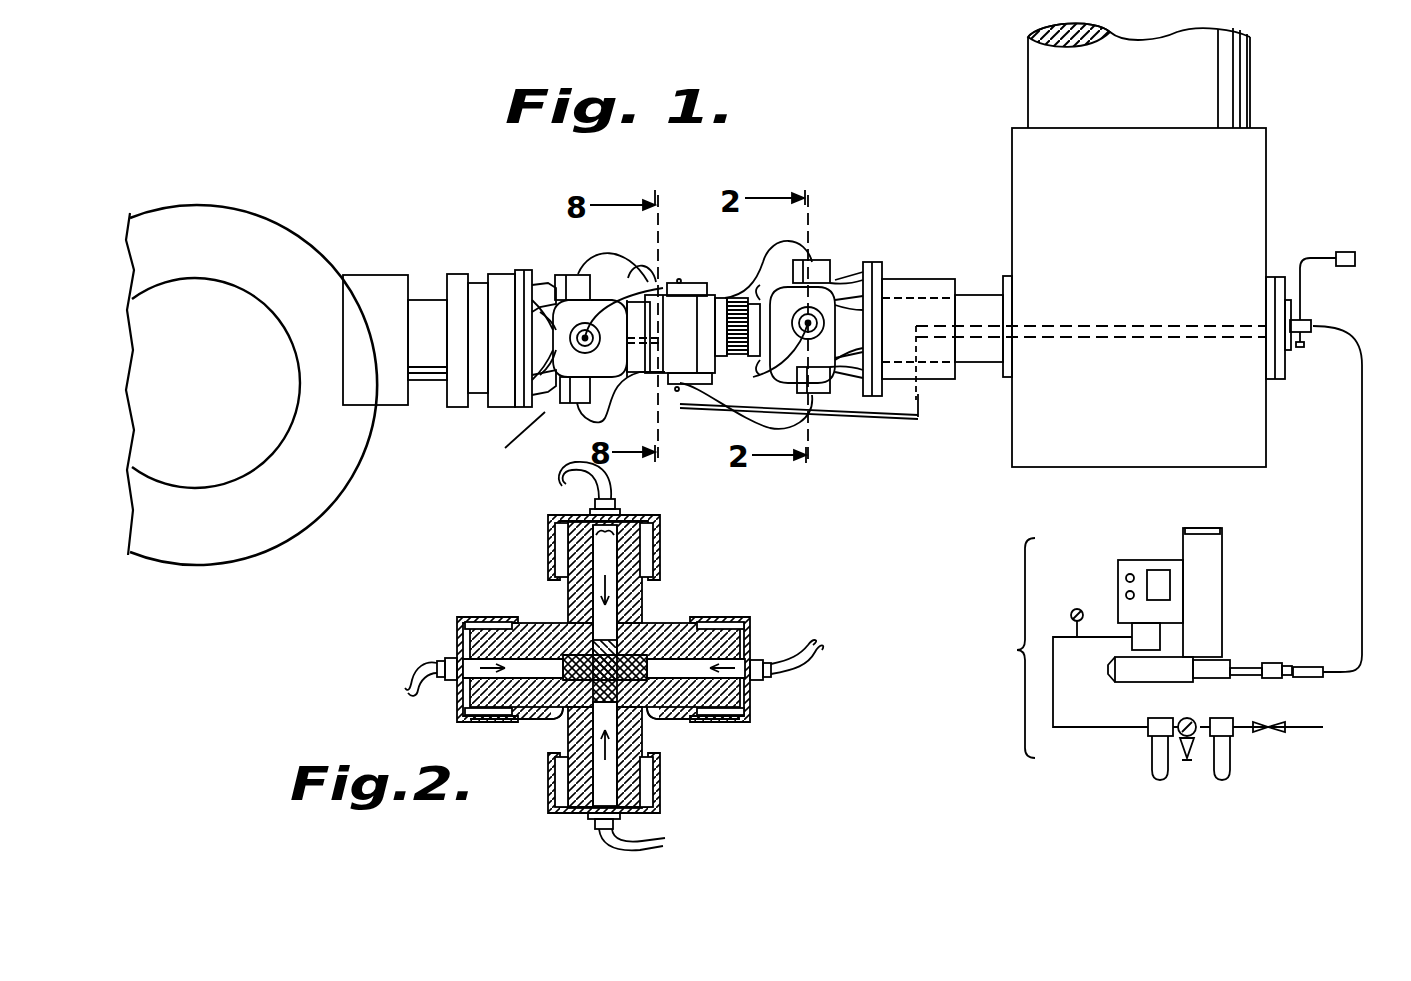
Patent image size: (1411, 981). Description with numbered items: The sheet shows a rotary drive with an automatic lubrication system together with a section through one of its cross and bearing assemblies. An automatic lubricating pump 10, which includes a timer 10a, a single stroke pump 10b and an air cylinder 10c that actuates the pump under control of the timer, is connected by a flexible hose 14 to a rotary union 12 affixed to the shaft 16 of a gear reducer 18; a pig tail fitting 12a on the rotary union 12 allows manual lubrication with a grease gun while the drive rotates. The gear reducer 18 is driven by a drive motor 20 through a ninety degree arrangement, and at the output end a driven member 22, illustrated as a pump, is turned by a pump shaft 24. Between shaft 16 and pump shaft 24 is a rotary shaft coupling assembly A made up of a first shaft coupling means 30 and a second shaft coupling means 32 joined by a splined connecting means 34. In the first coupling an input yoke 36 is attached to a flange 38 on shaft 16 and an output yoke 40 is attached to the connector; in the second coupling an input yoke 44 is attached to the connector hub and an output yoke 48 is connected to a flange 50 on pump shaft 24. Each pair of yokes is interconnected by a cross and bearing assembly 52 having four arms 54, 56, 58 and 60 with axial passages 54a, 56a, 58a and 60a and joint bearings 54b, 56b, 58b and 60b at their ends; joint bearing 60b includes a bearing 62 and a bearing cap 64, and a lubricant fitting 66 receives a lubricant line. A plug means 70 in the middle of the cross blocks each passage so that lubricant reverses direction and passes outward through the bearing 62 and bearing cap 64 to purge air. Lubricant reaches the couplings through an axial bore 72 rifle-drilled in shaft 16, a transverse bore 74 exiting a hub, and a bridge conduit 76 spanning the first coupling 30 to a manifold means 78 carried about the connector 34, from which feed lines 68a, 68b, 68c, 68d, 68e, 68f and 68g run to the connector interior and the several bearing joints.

In FIG. 1, the automatic lubricating pump 10 is at (1152, 659).
In FIG. 1, the timer 10a is at (1118, 572).
In FIG. 1, the single stroke pump 10b is at (1223, 655).
In FIG. 1, the air cylinder 10c is at (1145, 682).
In FIG. 1, the rotary union 12 is at (1318, 322).
In FIG. 1, the pig tail fitting 12a is at (1347, 252).
In FIG. 1, the flexible hose 14 is at (1360, 490).
In FIG. 1, the shaft 16 is at (973, 292).
In FIG. 1, the gear reducer 18 is at (1186, 191).
In FIG. 1, the drive motor 20 is at (1186, 103).
In FIG. 1, the driven member 22 is at (233, 434).
In FIG. 1, the pump shaft 24 is at (413, 298).
In FIG. 1, the first shaft coupling means 30 is at (814, 262).
In FIG. 1, the second shaft coupling means 32 is at (550, 262).
In FIG. 1, the connecting means 34 is at (656, 380).
In FIG. 1, the input yoke 36 is at (868, 262).
In FIG. 1, the flange 38 is at (878, 400).
In FIG. 1, the output yoke 40 is at (753, 300).
In FIG. 1, the input yoke 44 is at (652, 282).
In FIG. 1, the output yoke 48 is at (540, 272).
In FIG. 1, the flange 50 is at (500, 407).
In FIG. 1, the cross and bearing assembly 52 is at (870, 262).
In FIG. 2, the cross and bearing assembly 52 is at (692, 569).
In FIG. 2, the arm 54 is at (647, 580).
In FIG. 2, the axial passage 54a is at (640, 613).
In FIG. 2, the joint bearing 54b is at (636, 516).
In FIG. 2, the arm 56 is at (675, 717).
In FIG. 2, the axial passage 56a is at (716, 622).
In FIG. 2, the joint bearing 56b is at (752, 724).
In FIG. 2, the arm 58 is at (650, 740).
In FIG. 2, the axial passage 58a is at (592, 740).
In FIG. 2, the joint bearing 58b is at (662, 782).
In FIG. 2, the arm 60 is at (536, 625).
In FIG. 2, the axial passage 60a is at (522, 624).
In FIG. 2, the joint bearing 60b is at (460, 618).
In FIG. 2, the bearing 62 is at (470, 722).
In FIG. 2, the bearing cap 64 is at (457, 712).
In FIG. 2, the lubricant fitting 66 is at (445, 657).
In FIG. 1, the feed line 68a is at (666, 286).
In FIG. 1, the feed line 68b is at (588, 265).
In FIG. 2, the feed line 68b is at (572, 478).
In FIG. 1, the feed line 68c is at (580, 408).
In FIG. 2, the feed line 68c is at (660, 848).
In FIG. 1, the feed line 68d is at (505, 440).
In FIG. 2, the feed line 68d is at (406, 690).
In FIG. 2, the feed line 68e is at (817, 664).
In FIG. 1, the feed line 68f is at (792, 242).
In FIG. 1, the feed line 68g is at (785, 425).
In FIG. 2, the plug means 70 is at (582, 652).
In FIG. 1, the axial bore 72 is at (1120, 328).
In FIG. 1, the transverse bore 74 is at (925, 368).
In FIG. 1, the bridge conduit 76 is at (848, 420).
In FIG. 1, the manifold means 78 is at (700, 284).
In FIG. 1, the rotary shaft coupling assembly A is at (571, 254).